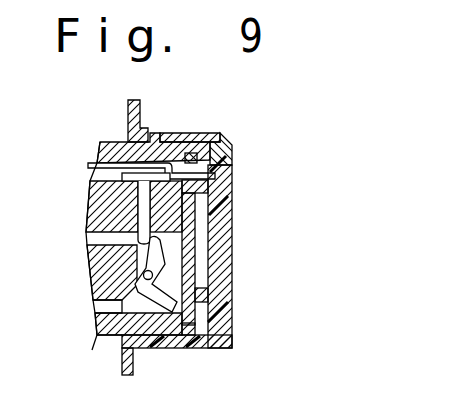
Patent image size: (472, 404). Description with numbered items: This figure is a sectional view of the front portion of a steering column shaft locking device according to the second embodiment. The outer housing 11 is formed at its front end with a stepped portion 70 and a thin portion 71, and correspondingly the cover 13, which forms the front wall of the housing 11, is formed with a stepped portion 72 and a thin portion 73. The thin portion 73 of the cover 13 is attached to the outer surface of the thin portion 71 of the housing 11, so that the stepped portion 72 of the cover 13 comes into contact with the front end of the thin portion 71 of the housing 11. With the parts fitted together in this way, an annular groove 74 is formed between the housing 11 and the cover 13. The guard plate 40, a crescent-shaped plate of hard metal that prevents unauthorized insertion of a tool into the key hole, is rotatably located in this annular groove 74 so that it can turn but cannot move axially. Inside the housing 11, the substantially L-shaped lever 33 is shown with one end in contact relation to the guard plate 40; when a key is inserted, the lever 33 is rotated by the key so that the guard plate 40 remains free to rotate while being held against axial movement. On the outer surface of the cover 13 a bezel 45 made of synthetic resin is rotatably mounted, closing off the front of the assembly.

The housing 11 is at (115, 141).
The stepped portion 70 is at (158, 133).
The thin portion 71 is at (176, 140).
The stepped portion 72 is at (194, 134).
The annular groove 74 is at (212, 165).
The guard plate 40 is at (190, 286).
The bezel 45 is at (232, 312).
The lever 33 is at (156, 318).
The thin portion 73 is at (172, 336).
The cover 13 is at (203, 336).